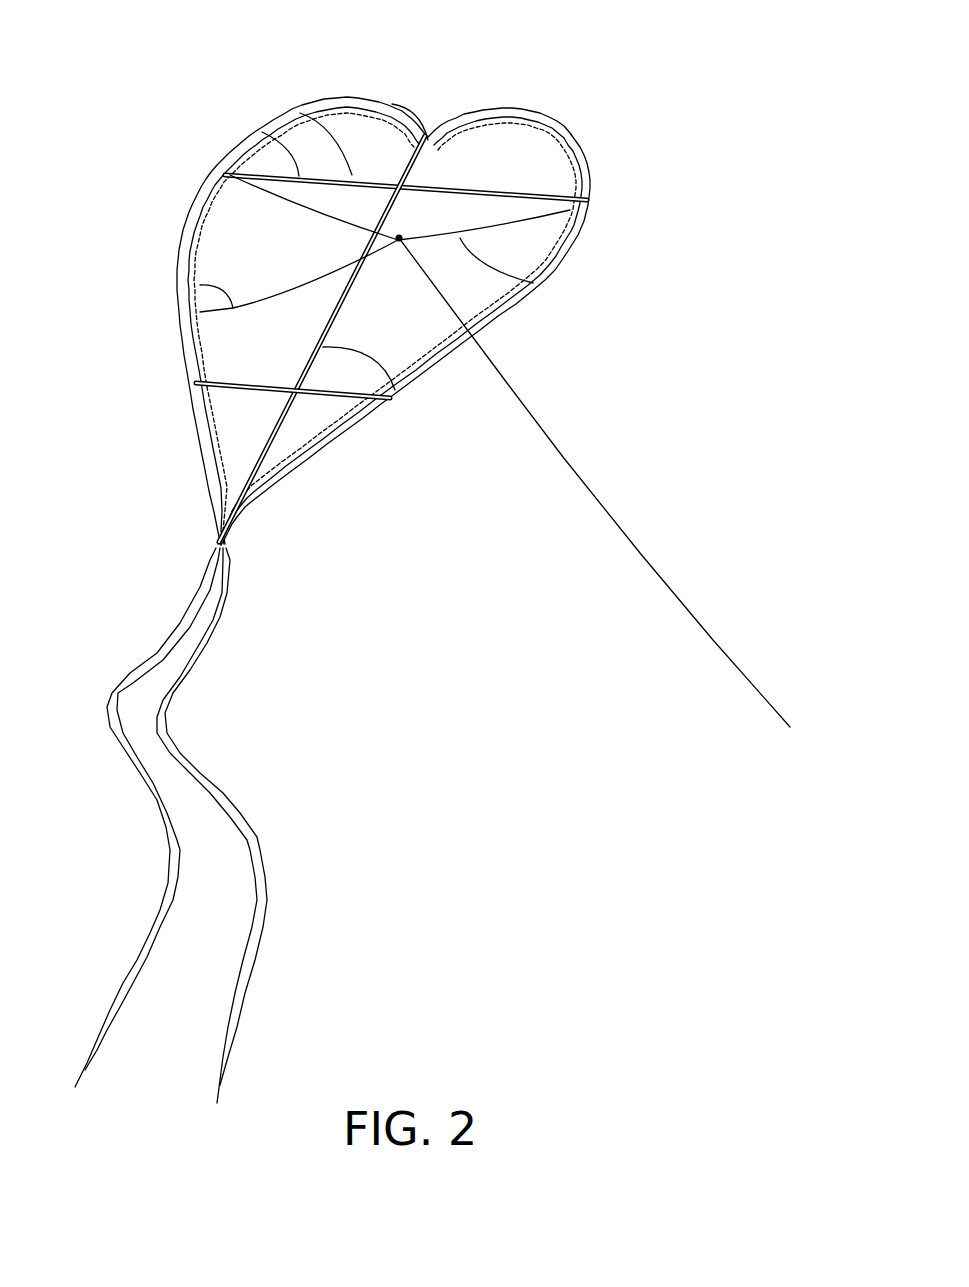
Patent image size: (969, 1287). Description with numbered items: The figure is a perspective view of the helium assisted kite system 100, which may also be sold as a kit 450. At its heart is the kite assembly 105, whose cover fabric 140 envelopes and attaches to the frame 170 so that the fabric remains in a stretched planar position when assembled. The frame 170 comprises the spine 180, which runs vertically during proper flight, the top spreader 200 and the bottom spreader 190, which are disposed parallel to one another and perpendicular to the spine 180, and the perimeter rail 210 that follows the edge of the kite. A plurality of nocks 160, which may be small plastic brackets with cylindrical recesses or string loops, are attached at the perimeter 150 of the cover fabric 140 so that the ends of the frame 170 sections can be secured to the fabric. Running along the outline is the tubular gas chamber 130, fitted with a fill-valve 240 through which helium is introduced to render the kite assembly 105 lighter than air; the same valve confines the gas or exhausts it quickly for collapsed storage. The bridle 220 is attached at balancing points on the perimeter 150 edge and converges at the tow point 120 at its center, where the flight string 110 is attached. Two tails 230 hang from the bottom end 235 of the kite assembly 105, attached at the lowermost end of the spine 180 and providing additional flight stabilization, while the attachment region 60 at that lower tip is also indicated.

The tail attachment 60 is at (240, 528).
The helium assisted kite system 100 is at (597, 43).
The kite assembly 105 is at (655, 76).
The flight string 110 is at (563, 453).
The tow point 120 is at (399, 243).
The tubular gas chamber 130 is at (220, 162).
The cover fabric 140 is at (523, 160).
The perimeter 150 is at (395, 103).
The nocks 160 is at (432, 134).
The frame 170 is at (300, 113).
The spine 180 is at (403, 396).
The bottom spreader 190 is at (307, 400).
The top spreader 200 is at (262, 132).
The perimeter rail 210 is at (589, 165).
The bridle 220 is at (200, 285).
The tail 230 is at (224, 794).
The bottom end 235 is at (235, 500).
The fill-valve 240 is at (193, 203).
The kit 450 is at (709, 114).